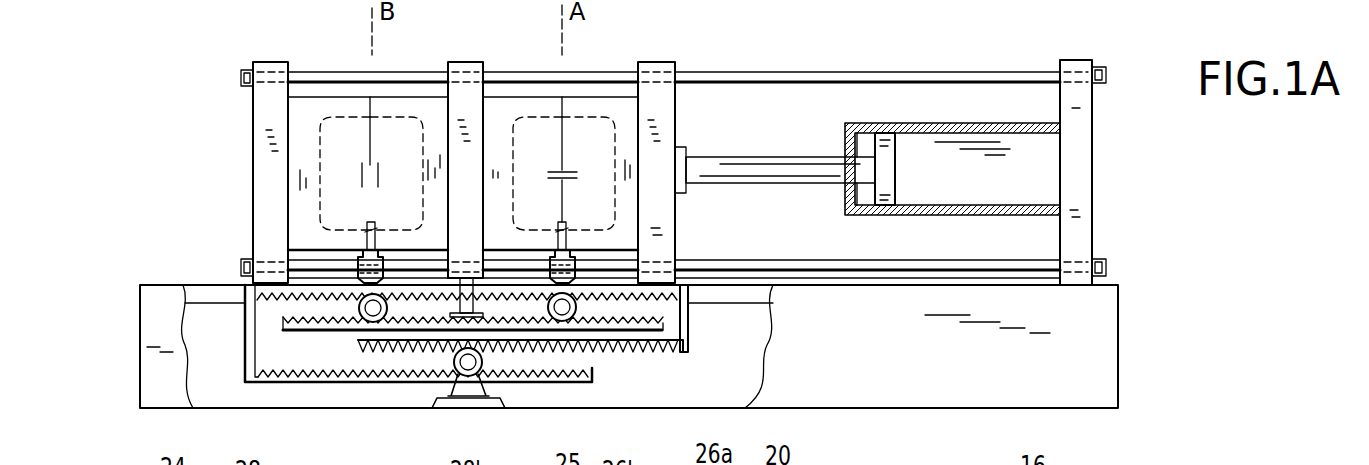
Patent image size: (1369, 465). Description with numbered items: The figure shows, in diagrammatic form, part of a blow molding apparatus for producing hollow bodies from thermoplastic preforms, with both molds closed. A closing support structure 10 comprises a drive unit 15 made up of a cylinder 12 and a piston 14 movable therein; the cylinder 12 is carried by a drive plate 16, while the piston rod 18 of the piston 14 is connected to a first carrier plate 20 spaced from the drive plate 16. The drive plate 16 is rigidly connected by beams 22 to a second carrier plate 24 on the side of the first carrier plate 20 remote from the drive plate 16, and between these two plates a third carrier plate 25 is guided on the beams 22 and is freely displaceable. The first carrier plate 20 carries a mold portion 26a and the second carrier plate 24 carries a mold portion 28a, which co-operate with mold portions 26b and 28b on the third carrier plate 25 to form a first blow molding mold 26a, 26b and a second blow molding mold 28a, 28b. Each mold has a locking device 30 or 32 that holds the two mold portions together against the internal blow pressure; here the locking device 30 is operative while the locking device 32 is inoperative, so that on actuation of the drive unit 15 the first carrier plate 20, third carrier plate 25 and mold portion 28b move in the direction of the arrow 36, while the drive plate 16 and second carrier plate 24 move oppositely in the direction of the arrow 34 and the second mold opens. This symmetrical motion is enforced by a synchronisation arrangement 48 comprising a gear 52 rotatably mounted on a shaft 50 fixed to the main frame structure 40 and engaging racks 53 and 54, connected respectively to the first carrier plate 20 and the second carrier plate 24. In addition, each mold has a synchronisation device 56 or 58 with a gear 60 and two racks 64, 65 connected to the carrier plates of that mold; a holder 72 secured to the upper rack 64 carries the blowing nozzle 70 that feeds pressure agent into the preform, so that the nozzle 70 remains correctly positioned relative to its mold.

The closing support structure 10 is at (768, 50).
The cylinder 12 is at (965, 192).
The piston 14 is at (888, 157).
The drive unit 15 is at (850, 108).
The drive plate 16 is at (1083, 130).
The piston rod 18 is at (712, 157).
The first carrier plate 20 is at (660, 107).
The beams 22 is at (817, 76).
The second carrier plate 24 is at (270, 97).
The third carrier plate 25 is at (466, 107).
The mold portion 26a is at (612, 105).
The mold portion 26b is at (502, 117).
The mold portion 28a is at (307, 110).
The mold portion 28b is at (430, 110).
The locking device 30 is at (570, 163).
The locking device 32 is at (358, 176).
The arrow 34 is at (812, 342).
The arrow 36 is at (840, 464).
The main frame structure 40 is at (163, 297).
The synchronisation arrangement 48 is at (612, 380).
The shaft 50 is at (470, 378).
The gear 52 is at (455, 366).
The rack 53 is at (640, 346).
The rack 54 is at (333, 378).
The synchronisation device 56 is at (662, 330).
The synchronisation device 58 is at (283, 330).
The gear 60 is at (353, 300).
The upper rack 64 is at (413, 290).
The rack 65 is at (622, 282).
The blowing nozzle 70 is at (376, 228).
The holder 72 is at (358, 262).